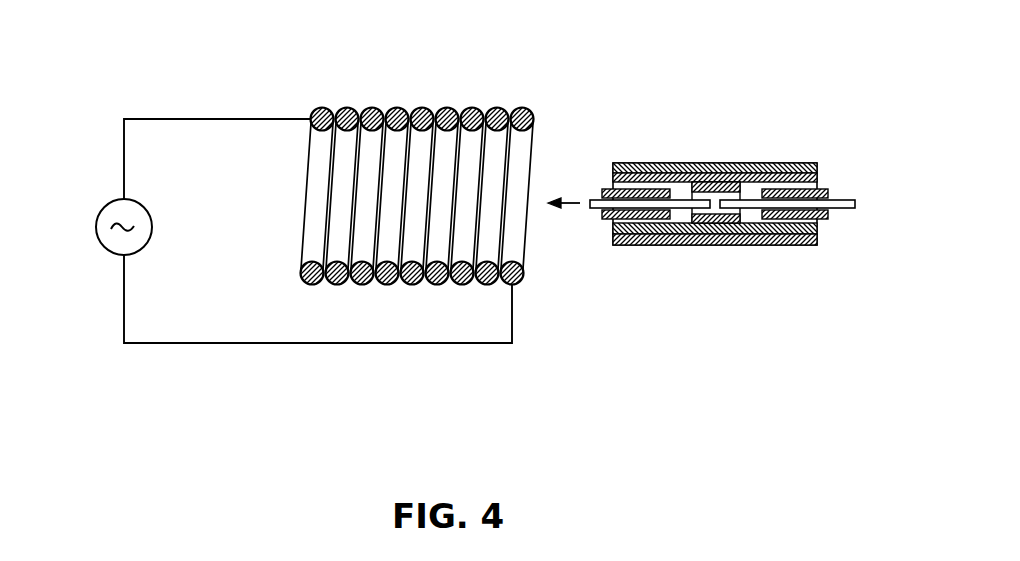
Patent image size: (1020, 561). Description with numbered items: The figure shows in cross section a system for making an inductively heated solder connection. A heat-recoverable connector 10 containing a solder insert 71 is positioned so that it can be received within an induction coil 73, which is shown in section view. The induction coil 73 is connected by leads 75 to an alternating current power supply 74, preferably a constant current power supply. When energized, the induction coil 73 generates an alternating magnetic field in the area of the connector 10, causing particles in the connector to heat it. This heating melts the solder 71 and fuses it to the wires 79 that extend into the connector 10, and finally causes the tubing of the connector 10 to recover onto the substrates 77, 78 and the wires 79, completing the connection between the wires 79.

The heat-recoverable connector 10 is at (722, 207).
The solder insert 71 is at (703, 182).
The induction coil 73 is at (400, 108).
The alternating current power supply 74 is at (105, 207).
The leads 75 is at (215, 117).
The substrate 77 is at (604, 220).
The substrate 78 is at (827, 220).
The wires 79 is at (595, 199).